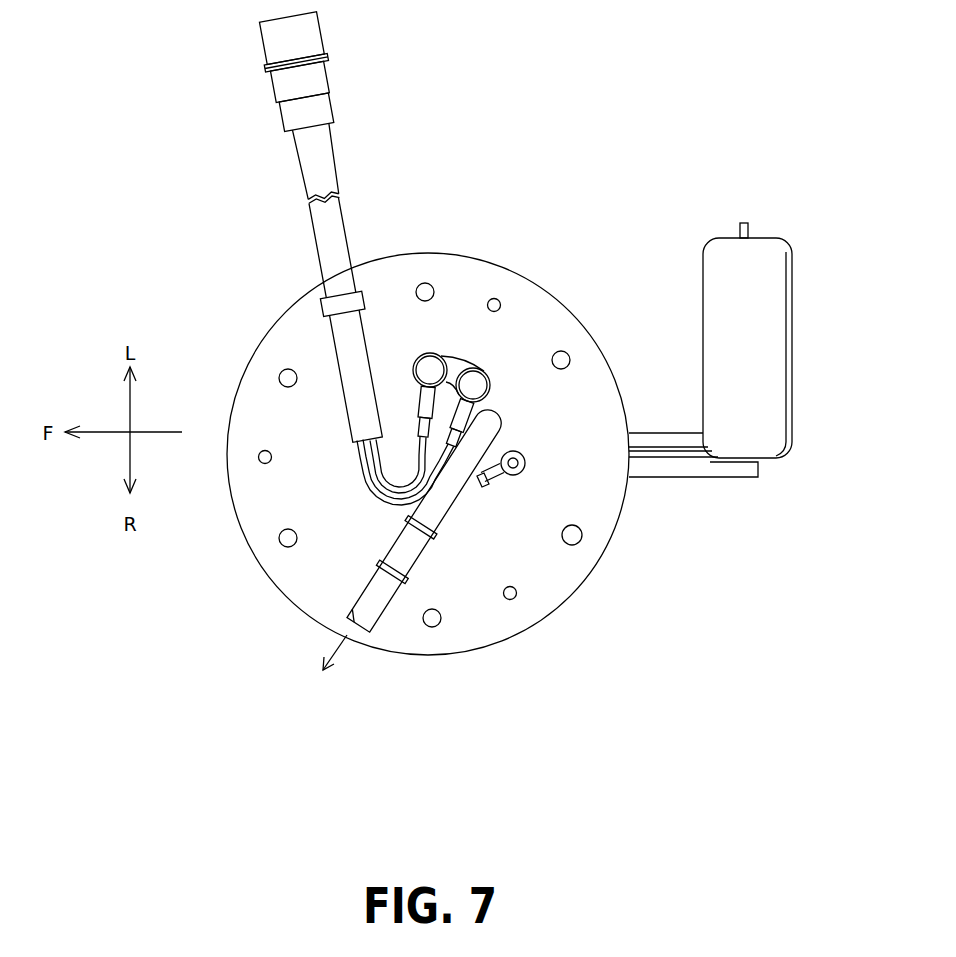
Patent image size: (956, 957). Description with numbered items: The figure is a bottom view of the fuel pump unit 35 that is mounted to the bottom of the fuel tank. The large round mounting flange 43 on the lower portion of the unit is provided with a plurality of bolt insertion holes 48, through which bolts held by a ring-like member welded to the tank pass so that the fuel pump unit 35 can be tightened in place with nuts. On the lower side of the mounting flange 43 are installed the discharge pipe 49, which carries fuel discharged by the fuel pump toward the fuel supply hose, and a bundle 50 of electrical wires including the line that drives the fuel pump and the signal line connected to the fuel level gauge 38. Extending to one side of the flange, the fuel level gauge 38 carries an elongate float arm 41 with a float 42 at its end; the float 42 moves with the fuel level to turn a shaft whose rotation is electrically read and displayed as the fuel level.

The fuel pump unit 35 is at (213, 203).
The mounting flange 43 is at (465, 268).
The bundle of electrical wires 50 is at (333, 227).
The discharge pipe 49 is at (362, 585).
The bolt insertion holes 48 is at (573, 538).
The float arm 41 is at (663, 448).
The fuel level gauge 38 is at (710, 472).
The float 42 is at (770, 268).